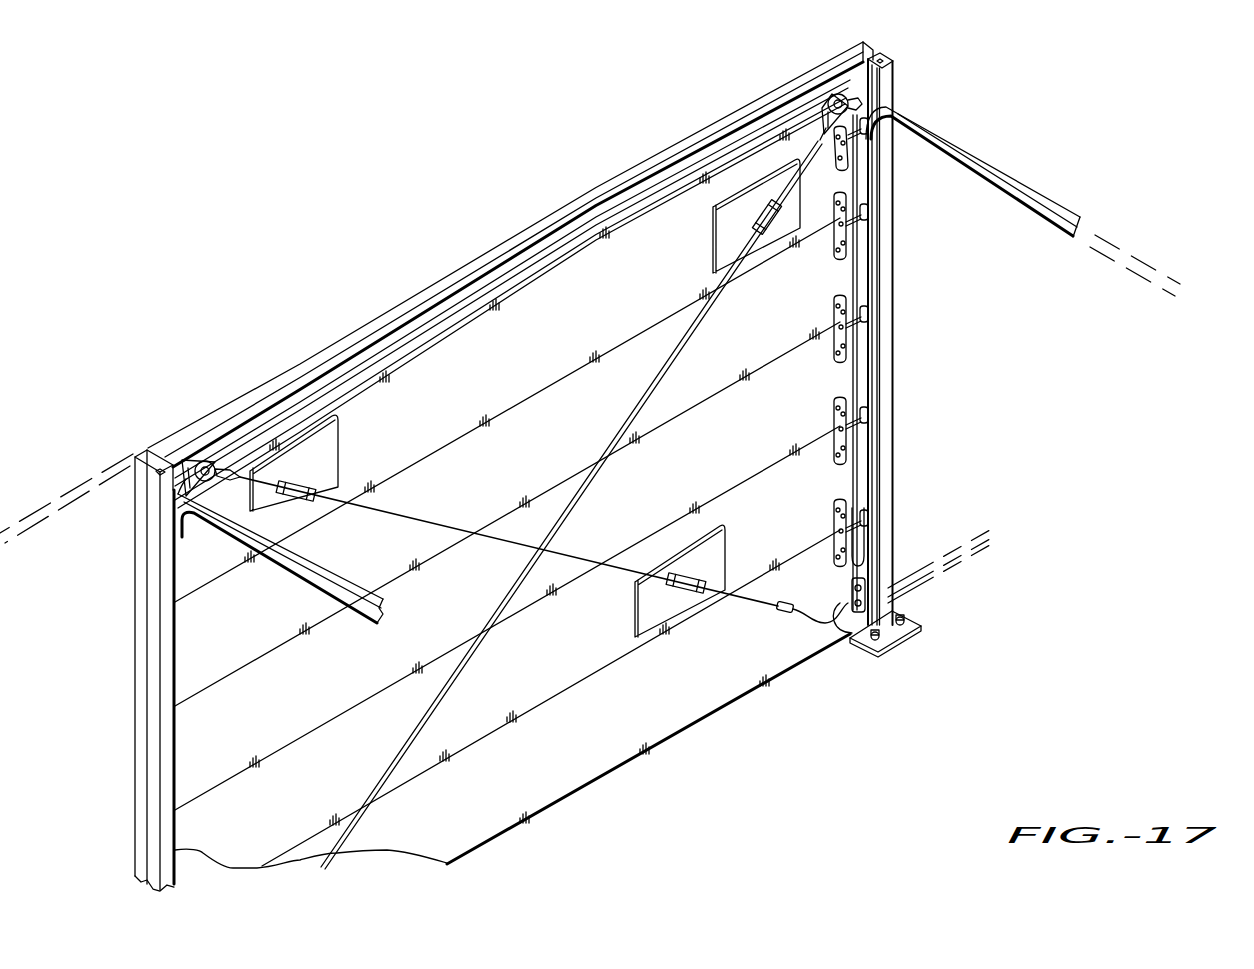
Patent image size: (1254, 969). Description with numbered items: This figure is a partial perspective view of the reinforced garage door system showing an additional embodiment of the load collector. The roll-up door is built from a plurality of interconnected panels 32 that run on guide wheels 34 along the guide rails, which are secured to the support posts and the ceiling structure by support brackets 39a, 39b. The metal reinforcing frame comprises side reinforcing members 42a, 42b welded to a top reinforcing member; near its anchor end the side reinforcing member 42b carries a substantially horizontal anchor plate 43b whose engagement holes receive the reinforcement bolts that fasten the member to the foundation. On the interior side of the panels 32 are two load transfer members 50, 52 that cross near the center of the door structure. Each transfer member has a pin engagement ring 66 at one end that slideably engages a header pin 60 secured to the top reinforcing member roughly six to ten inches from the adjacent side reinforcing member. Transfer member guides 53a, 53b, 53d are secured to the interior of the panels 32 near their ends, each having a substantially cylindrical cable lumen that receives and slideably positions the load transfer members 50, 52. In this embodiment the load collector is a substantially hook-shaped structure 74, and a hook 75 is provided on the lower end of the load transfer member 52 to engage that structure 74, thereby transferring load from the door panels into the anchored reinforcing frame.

The panels 32 is at (302, 712).
The guide wheels 34 is at (868, 438).
The support bracket 39a is at (248, 534).
The support bracket 39b is at (1020, 174).
The side reinforcing member 42a is at (150, 697).
The side reinforcing member 42b is at (886, 384).
The anchor plate 43b is at (922, 628).
The load transfer member 50 is at (697, 326).
The load transfer member 52 is at (463, 526).
The transfer member guide 53a is at (342, 449).
The transfer member guide 53b is at (711, 244).
The transfer member guide 53d is at (632, 598).
The header pin 60 is at (213, 464).
The pin engagement ring 66 is at (197, 449).
The hook-shaped structure 74 is at (830, 645).
The hook 75 is at (802, 617).